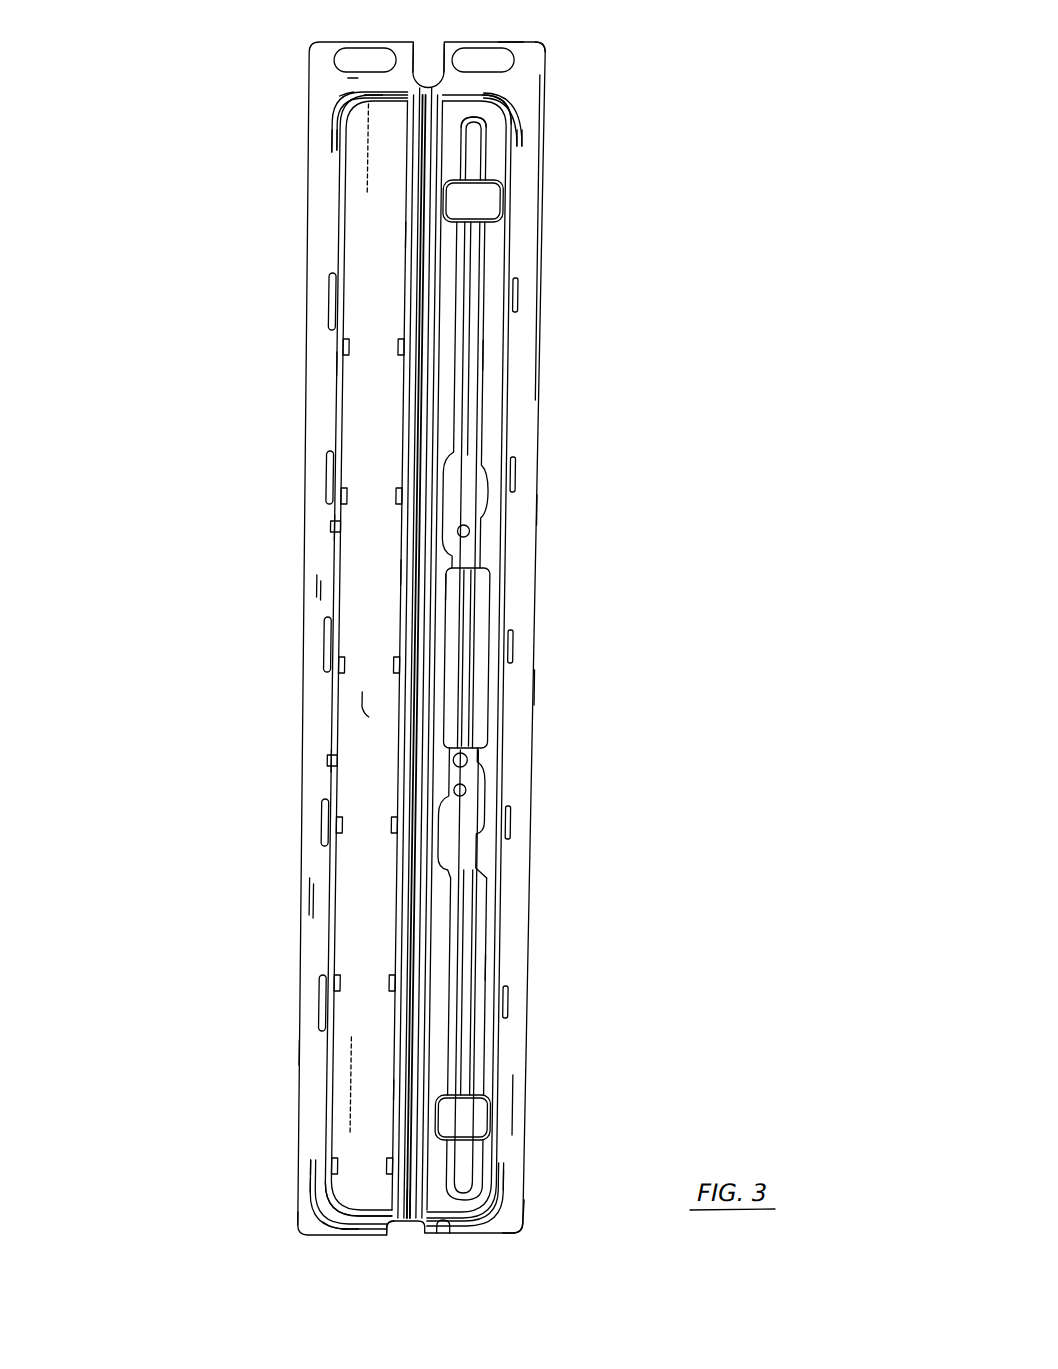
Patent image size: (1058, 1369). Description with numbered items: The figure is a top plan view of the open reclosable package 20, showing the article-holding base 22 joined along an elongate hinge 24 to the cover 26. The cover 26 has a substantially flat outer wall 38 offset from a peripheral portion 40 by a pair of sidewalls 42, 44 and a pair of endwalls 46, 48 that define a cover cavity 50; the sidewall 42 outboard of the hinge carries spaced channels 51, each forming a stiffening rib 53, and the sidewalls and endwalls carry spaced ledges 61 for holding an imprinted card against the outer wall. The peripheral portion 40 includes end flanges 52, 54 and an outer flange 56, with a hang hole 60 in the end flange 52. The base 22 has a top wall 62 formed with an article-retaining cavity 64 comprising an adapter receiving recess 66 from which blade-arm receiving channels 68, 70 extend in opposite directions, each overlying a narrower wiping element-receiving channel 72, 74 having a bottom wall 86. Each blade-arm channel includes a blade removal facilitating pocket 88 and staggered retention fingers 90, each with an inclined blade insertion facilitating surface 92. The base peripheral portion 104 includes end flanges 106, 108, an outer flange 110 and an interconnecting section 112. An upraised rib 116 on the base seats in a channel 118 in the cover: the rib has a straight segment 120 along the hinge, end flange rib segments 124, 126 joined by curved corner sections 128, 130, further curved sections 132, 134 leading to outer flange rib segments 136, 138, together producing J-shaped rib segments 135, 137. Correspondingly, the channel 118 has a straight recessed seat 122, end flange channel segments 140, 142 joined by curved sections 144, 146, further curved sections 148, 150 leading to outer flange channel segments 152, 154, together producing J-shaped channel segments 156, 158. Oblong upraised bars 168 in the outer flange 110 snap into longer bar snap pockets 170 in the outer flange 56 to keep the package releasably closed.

The reclosable package 20 is at (590, 210).
The article-holding base 22 is at (543, 513).
The hinge 24 is at (418, 84).
The cover 26 is at (307, 899).
The outer wall 38 is at (369, 697).
The peripheral portion 40 is at (311, 1053).
The sidewall 42 is at (346, 402).
The sidewall 44 is at (404, 572).
The endwall 46 is at (370, 1214).
The endwall 48 is at (346, 160).
The cover cavity 50 is at (336, 363).
The channel 51 is at (336, 529).
The end flange 52 is at (349, 79).
The sidewall stiffening rib 53 is at (348, 529).
The end flange 54 is at (312, 1222).
The outer flange 56 is at (322, 582).
The hang hole 60 is at (342, 47).
The ledge 61 is at (399, 345).
The top wall 62 is at (493, 892).
The article-retaining cavity 64 is at (487, 407).
The adapter receiving recess 66 is at (497, 623).
The blade-arm receiving channel 68 is at (487, 356).
The blade-arm receiving channel 70 is at (498, 968).
The wiping element-receiving channel 72 is at (482, 117).
The wiping element-receiving channel 74 is at (480, 1078).
The bottom wall 86 is at (485, 126).
The blade removal facilitating pocket 88 is at (505, 186).
The blade retention finger 90 is at (491, 462).
The blade insertion facilitating surface 92 is at (489, 486).
The peripheral portion 104 is at (543, 692).
The end flange 106 is at (514, 77).
The end flange 108 is at (522, 1226).
The outer flange 110 is at (518, 910).
The interconnecting section 112 is at (481, 46).
The rib 116 is at (519, 1182).
The channel 118 is at (321, 1183).
The straight rib segment 120 is at (441, 594).
The recessed seat 122 is at (403, 234).
The end flange rib segment 124 is at (484, 110).
The end flange rib segment 126 is at (503, 1249).
The curved corner interconnecting rib section 128 is at (444, 50).
The curved corner interconnecting rib section 130 is at (431, 1223).
The curved corner interconnecting rib section 132 is at (517, 112).
The curved corner interconnecting rib section 134 is at (518, 1199).
The J-shaped rib segment 135 is at (501, 60).
The outer flange rib segment 136 is at (519, 138).
The J-shaped rib segment 137 is at (460, 1236).
The outer flange rib segment 138 is at (525, 1168).
The end flange channel segment 140 is at (368, 97).
The end flange channel segment 142 is at (362, 1229).
The curved corner interconnecting channel section 144 is at (409, 46).
The curved corner interconnecting channel section 146 is at (407, 1233).
The curved corner interconnecting channel section 148 is at (334, 113).
The curved corner interconnecting channel section 150 is at (333, 1201).
The outer flange channel segment 152 is at (331, 138).
The outer flange channel segment 154 is at (325, 1170).
The J-shaped channel segment 156 is at (335, 100).
The J-shaped channel segment 158 is at (341, 1222).
The upraised bar 168 is at (521, 295).
The bar snap pocket 170 is at (327, 297).